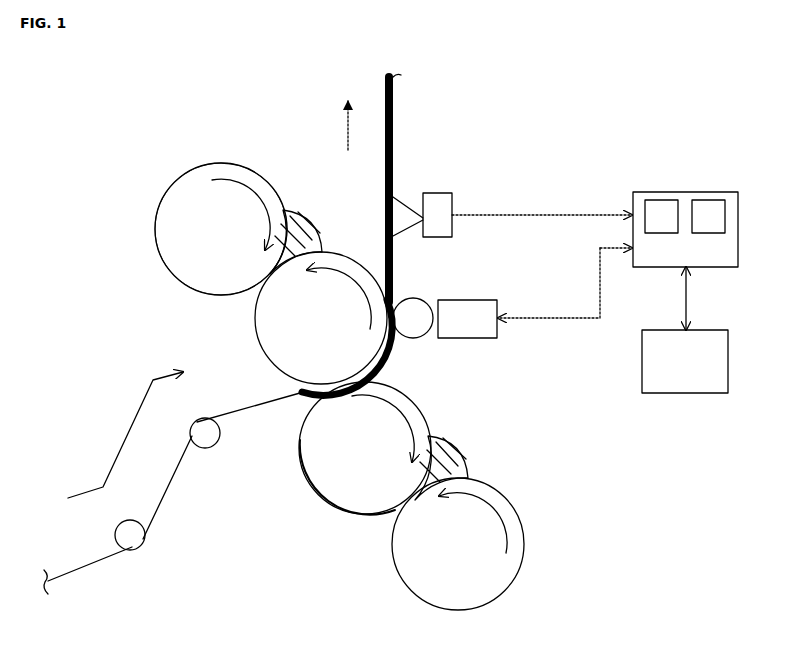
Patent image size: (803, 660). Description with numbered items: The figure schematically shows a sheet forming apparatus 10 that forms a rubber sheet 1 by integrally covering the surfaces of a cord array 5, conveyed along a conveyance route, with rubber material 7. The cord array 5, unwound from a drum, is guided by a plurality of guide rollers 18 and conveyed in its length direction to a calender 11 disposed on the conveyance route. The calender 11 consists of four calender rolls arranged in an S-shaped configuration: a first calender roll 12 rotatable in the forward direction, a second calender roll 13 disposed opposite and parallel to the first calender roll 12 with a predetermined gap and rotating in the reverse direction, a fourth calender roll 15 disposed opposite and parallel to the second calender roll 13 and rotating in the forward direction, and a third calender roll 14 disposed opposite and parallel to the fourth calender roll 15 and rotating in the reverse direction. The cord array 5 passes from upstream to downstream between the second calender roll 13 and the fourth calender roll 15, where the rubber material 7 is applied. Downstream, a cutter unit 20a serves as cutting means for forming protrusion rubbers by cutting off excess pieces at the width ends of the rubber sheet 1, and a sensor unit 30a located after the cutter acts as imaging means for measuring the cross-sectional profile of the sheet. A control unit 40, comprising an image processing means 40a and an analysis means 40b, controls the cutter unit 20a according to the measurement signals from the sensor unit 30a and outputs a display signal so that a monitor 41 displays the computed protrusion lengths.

The rubber sheet 1 is at (394, 107).
The cord array 5 is at (178, 468).
The rubber material 7 is at (300, 232).
The sheet forming apparatus 10 is at (270, 96).
The calender 11 is at (205, 163).
The first calender roll 12 is at (190, 208).
The second calender roll 13 is at (272, 340).
The third calender roll 14 is at (415, 565).
The fourth calender roll 15 is at (342, 458).
The guide roller 18 is at (205, 433).
The cutter unit 20a is at (498, 339).
The sensor unit 30a is at (453, 194).
The control unit 40 is at (713, 192).
The image processing means 40a is at (660, 233).
The analysis means 40b is at (705, 233).
The monitor 41 is at (718, 330).